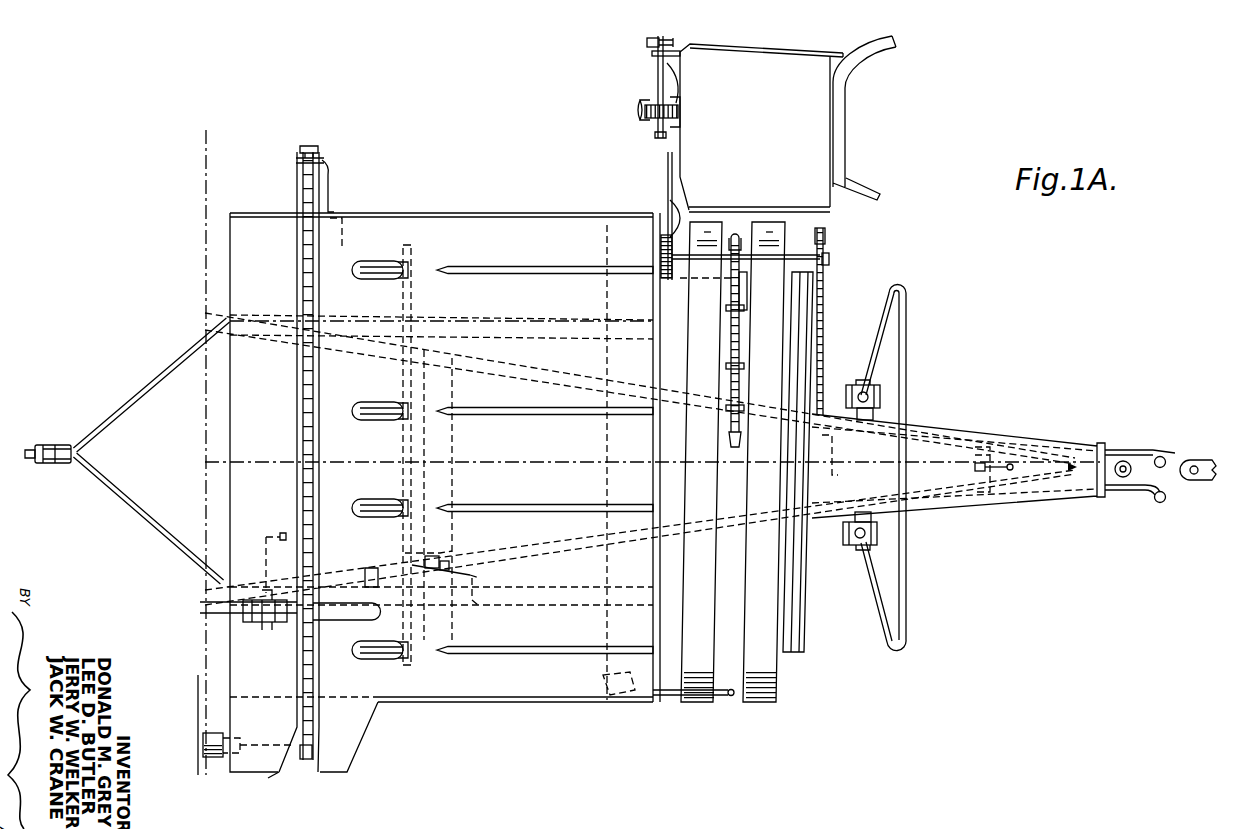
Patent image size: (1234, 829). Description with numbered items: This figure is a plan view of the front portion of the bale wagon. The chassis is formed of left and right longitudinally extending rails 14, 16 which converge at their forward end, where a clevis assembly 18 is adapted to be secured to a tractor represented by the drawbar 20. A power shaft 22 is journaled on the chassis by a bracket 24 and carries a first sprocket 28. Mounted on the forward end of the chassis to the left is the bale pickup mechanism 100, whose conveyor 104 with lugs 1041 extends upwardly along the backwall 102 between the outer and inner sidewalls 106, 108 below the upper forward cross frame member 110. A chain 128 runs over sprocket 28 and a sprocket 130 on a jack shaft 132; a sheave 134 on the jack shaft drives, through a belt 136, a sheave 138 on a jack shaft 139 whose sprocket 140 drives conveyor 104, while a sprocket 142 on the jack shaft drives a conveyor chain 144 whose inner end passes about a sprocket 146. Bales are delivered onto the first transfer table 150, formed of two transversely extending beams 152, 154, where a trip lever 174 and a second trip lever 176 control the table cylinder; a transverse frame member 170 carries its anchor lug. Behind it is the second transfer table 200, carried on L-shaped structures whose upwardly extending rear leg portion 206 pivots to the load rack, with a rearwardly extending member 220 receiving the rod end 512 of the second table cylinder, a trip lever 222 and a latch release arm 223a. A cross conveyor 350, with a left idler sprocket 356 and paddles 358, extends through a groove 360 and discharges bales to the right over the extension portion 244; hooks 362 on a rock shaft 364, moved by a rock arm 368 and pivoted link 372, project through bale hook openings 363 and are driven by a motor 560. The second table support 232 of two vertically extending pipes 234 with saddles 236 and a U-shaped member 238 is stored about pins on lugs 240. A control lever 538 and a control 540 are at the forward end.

The left longitudinally extending rail 14 is at (545, 367).
The right longitudinally extending rail 16 is at (533, 557).
The clevis assembly 18 is at (1122, 452).
The drawbar 20 is at (1202, 480).
The power shaft 22 is at (928, 463).
The bracket 24 is at (977, 493).
The first sprocket 28 is at (820, 455).
The bale pickup mechanism 100 is at (858, 100).
The backwall 102 is at (680, 147).
The conveyor 104 is at (680, 97).
The lugs 1041 is at (680, 110).
The outer sidewall 106 is at (780, 48).
The inner sidewall 108 is at (713, 208).
The upper forward cross frame member 110 is at (840, 152).
The chain 128 is at (823, 302).
The sprocket 130 is at (828, 233).
The jack shaft 132 is at (683, 265).
The sheave 134 is at (680, 217).
The belt 136 is at (667, 163).
The sheave 138 is at (647, 42).
The jack shaft 139 is at (652, 63).
The sprocket 140 is at (647, 100).
The sprocket 142 is at (737, 237).
The conveyor chain 144 is at (728, 337).
The sprocket 146 is at (725, 427).
The first transfer table 150 is at (738, 721).
The transversely extending beam 152 is at (765, 703).
The transversely extending beam 154 is at (700, 703).
The transverse frame member 170 is at (452, 458).
The trip lever 174 is at (663, 698).
The second trip lever 176 is at (747, 297).
The second transfer table 200 is at (485, 712).
The upwardly extending rear leg portion 206 is at (147, 524).
The rearwardly extending member 220 is at (140, 382).
The trip lever 222 is at (262, 622).
The latch release arm 223a is at (278, 533).
The second table support 232 is at (912, 357).
The vertically extending pipes 234 is at (853, 387).
The saddles 236 is at (880, 395).
The U-shaped member 238 is at (900, 573).
The lugs 240 is at (872, 411).
The extension portion 244 is at (268, 773).
The cross conveyor 350 is at (313, 190).
The left idler sprocket 356 is at (308, 145).
The paddles 358 is at (327, 160).
The groove 360 is at (302, 243).
The hooks 362 is at (385, 277).
The bale hook openings 363 is at (372, 262).
The rock shaft 364 is at (400, 470).
The rock arm 368 is at (428, 560).
The pivoted link 372 is at (468, 578).
The rod end 512 is at (52, 432).
The control lever 538 is at (1160, 456).
The control 540 is at (1160, 502).
The motor 560 is at (200, 722).